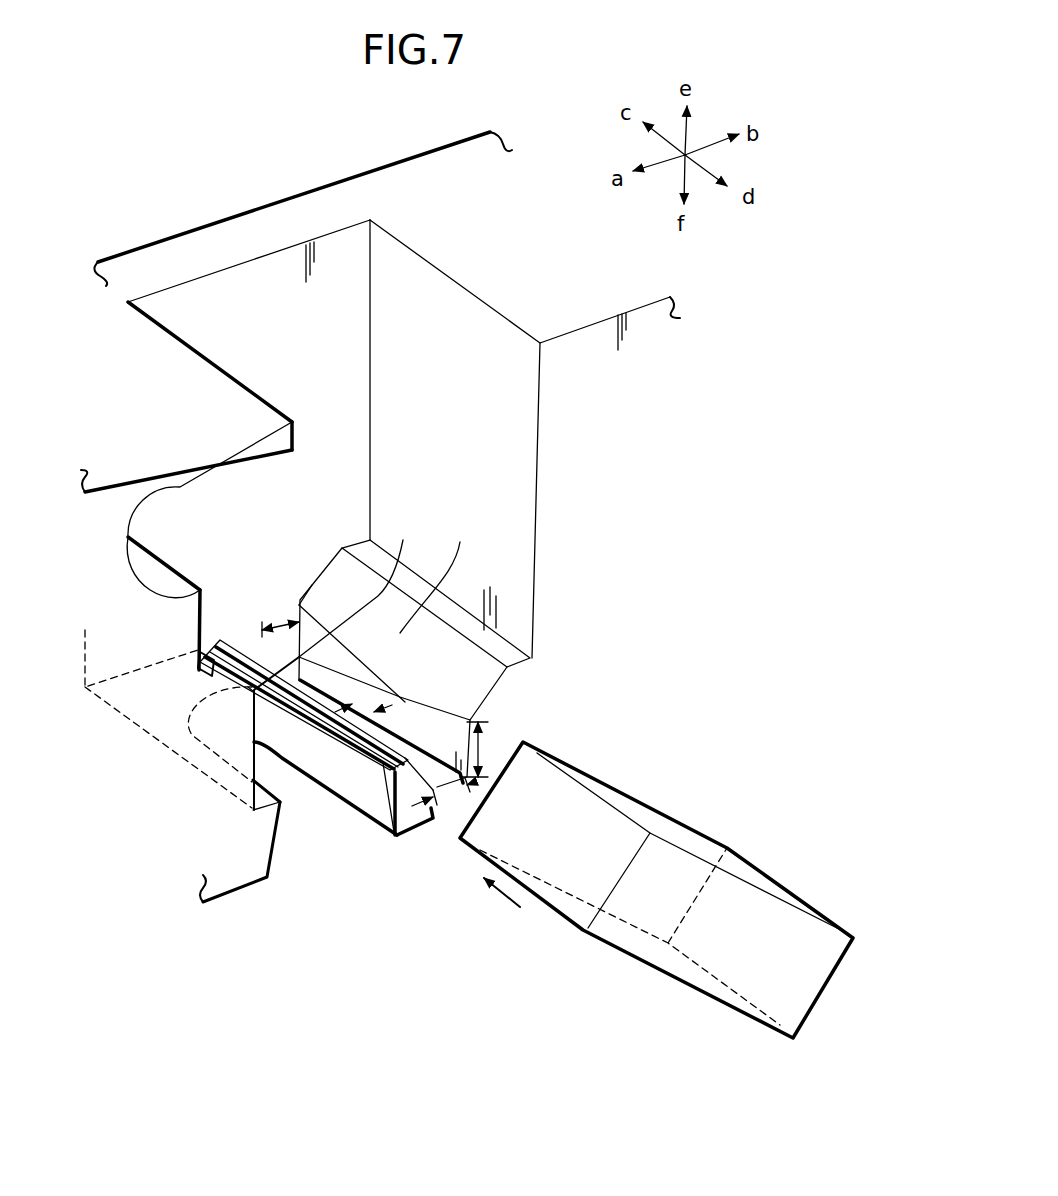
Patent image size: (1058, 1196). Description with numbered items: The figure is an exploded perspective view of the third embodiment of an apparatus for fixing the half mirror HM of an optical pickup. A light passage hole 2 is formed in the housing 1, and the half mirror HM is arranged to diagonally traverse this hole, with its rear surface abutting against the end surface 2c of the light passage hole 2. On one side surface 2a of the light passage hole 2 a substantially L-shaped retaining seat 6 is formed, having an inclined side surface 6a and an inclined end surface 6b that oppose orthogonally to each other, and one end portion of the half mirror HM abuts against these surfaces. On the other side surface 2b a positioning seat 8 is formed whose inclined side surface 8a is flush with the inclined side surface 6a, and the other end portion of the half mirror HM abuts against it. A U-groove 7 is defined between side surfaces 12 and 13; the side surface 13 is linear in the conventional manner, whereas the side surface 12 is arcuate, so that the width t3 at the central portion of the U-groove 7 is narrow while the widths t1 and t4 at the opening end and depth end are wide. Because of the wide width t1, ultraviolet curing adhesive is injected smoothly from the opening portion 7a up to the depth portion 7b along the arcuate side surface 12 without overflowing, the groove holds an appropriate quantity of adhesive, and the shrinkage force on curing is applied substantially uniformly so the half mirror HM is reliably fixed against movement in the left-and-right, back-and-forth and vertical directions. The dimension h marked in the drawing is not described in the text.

The housing 1 is at (272, 218).
The light passage hole 2 is at (240, 288).
The one side surface of the light passage hole 2a is at (512, 402).
The other side surface of the light passage hole 2b is at (198, 627).
The end surface of the light passage hole 2c is at (346, 380).
The retaining seat 6 is at (480, 505).
The inclined side surface of the retaining seat 6a is at (357, 583).
The inclined end surface of the retaining seat 6b is at (437, 571).
The U-groove 7 is at (408, 885).
The opening portion of the U-groove 7a is at (415, 768).
The depth portion of the U-groove 7b is at (296, 700).
The positioning seat 8 is at (232, 652).
The inclined side surface of the positioning seat 8a is at (197, 672).
The arcuate side surface 12 is at (430, 727).
The linear side surface 13 is at (305, 655).
The half mirror HM is at (668, 823).
The height dimension h is at (480, 749).
The width of the opening end of the U-groove t1 is at (443, 800).
The width of the central portion of the U-groove t3 is at (343, 695).
The width of the depth end of the U-groove t4 is at (280, 614).